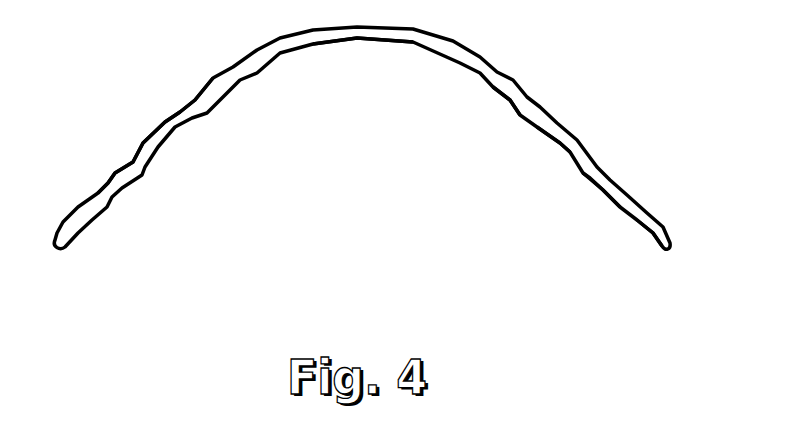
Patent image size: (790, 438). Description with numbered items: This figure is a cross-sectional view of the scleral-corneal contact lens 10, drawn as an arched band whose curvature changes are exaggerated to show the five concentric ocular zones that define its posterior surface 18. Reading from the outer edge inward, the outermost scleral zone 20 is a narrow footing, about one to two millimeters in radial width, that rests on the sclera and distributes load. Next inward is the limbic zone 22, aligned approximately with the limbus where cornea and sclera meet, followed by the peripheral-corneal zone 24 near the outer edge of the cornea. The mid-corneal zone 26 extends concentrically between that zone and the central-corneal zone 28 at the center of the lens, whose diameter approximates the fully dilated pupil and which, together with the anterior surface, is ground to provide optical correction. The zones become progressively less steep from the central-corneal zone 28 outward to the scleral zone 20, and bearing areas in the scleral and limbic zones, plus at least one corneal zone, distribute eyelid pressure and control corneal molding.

The scleral-corneal contact lens 10 is at (597, 100).
The posterior surface 18 is at (247, 87).
The scleral zone 20 is at (653, 235).
The limbic zone 22 is at (606, 192).
The peripheral-corneal zone 24 is at (560, 142).
The mid-corneal zone 26 is at (510, 100).
The central-corneal zone 28 is at (388, 40).